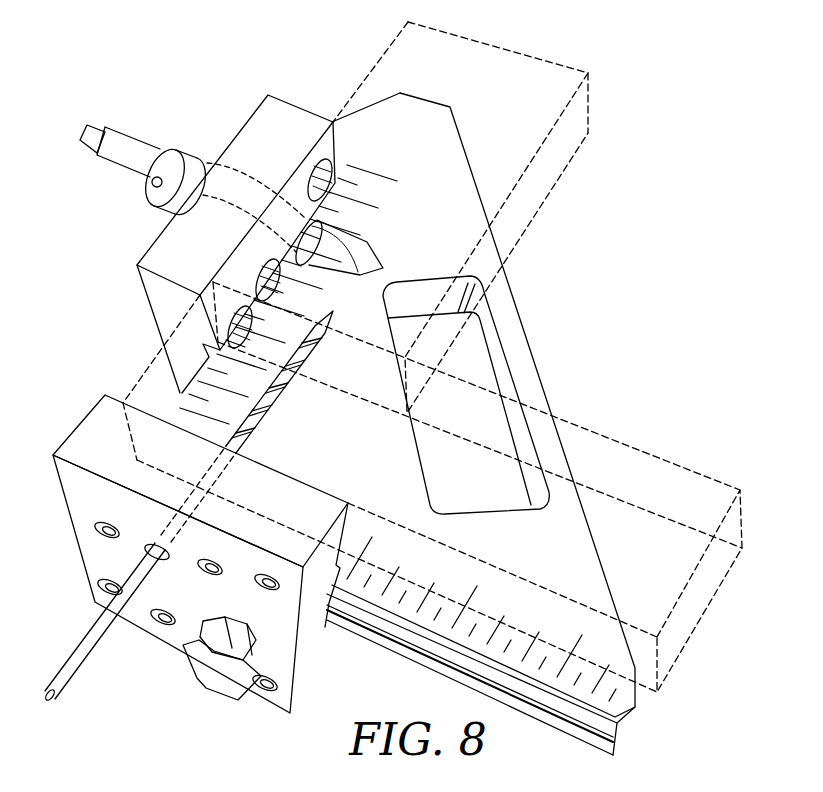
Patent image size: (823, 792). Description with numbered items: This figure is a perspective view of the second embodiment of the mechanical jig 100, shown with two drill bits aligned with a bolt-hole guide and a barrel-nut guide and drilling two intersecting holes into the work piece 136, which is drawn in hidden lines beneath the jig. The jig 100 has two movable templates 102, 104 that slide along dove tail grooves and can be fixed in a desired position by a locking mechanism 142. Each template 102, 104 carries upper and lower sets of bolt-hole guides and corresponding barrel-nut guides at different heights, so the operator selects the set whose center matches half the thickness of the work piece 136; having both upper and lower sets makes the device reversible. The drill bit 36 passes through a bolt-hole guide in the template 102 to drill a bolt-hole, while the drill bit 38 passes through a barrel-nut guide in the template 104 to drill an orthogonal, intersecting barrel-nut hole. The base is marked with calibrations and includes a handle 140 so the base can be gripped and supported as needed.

The drill bit 36 is at (92, 638).
The drill bit 38 is at (120, 143).
The mechanical jig 100 is at (614, 281).
The template 102 is at (287, 620).
The template 104 is at (187, 263).
The work piece 136 is at (540, 107).
The handle 140 is at (473, 370).
The locking mechanism 142 is at (207, 684).